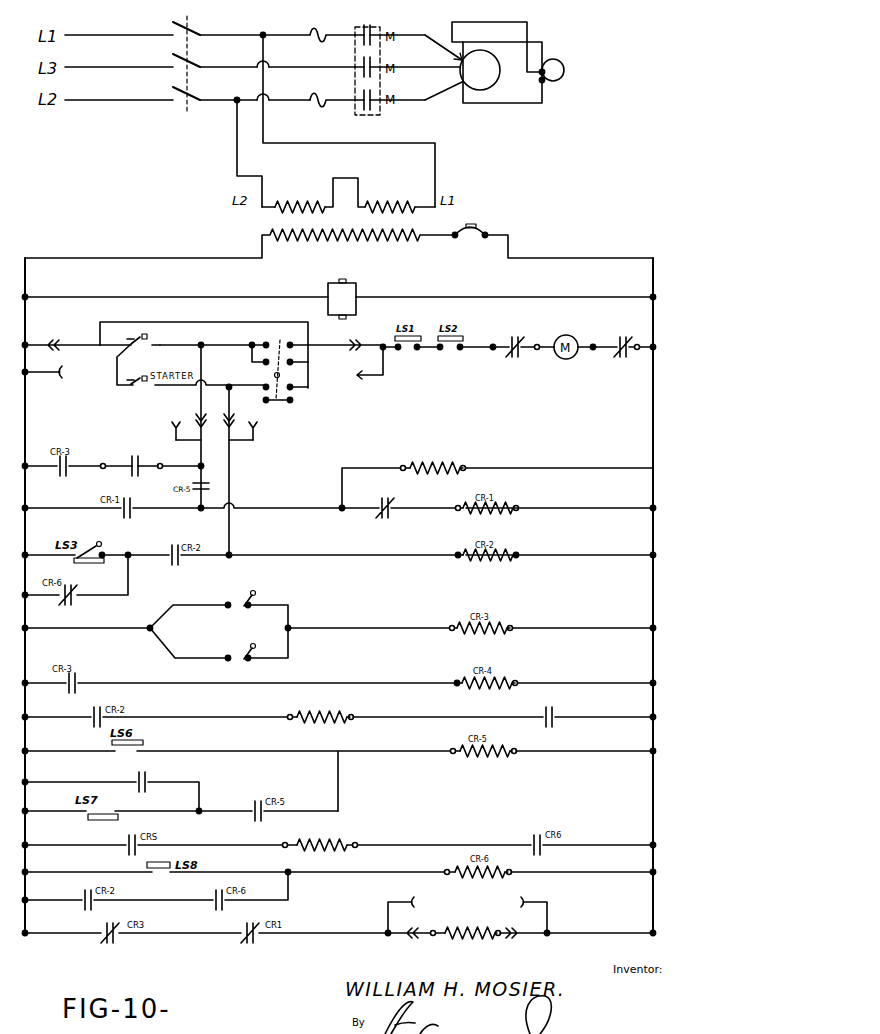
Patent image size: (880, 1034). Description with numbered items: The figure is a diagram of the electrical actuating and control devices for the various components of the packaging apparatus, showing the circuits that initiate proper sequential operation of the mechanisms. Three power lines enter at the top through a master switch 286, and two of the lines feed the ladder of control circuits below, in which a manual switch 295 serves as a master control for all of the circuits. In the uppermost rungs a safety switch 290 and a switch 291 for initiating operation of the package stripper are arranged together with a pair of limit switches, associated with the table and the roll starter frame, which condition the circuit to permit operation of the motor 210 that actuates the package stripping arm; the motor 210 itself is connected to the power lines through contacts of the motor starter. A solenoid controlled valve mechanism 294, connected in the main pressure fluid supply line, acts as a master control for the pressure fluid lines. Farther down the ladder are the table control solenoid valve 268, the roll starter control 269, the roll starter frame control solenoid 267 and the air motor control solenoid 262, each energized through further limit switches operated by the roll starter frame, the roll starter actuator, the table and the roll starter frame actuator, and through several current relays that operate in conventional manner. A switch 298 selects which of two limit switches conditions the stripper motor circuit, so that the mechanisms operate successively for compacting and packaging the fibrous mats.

The master switch 286 is at (190, 122).
The motor 210 is at (485, 100).
The manual switch 295 is at (494, 231).
The solenoid controlled valve mechanism 294 is at (362, 286).
The switch 291 is at (147, 327).
The safety switch 290 is at (282, 327).
The table control solenoid valve 268 is at (470, 467).
The switch 298 is at (167, 651).
The roll starter control 269 is at (356, 727).
The roll starter frame control solenoid 267 is at (356, 856).
The air motor control solenoid 262 is at (455, 946).